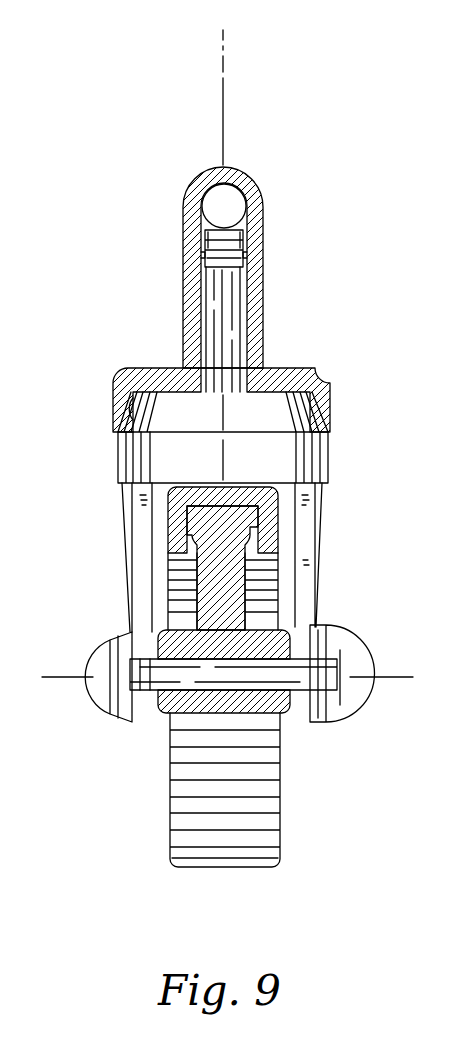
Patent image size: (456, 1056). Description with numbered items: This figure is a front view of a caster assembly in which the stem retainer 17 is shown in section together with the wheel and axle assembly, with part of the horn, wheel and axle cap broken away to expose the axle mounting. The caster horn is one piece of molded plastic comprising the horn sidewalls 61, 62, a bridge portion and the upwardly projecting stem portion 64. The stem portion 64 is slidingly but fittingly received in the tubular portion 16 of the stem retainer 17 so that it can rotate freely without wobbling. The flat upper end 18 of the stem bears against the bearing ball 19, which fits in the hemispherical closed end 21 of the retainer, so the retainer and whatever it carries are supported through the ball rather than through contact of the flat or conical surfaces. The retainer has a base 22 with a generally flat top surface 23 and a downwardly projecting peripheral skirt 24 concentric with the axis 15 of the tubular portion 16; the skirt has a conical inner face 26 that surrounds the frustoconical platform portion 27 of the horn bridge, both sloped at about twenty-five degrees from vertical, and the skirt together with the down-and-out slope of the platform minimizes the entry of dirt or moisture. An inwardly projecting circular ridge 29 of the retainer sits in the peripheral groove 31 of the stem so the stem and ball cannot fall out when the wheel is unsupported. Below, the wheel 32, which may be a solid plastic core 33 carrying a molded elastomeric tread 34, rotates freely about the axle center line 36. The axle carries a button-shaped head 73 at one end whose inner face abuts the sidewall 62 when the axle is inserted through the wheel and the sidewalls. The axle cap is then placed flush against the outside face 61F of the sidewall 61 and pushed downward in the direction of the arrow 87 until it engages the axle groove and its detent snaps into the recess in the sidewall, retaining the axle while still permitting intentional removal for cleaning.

The axis 15 is at (222, 78).
The tubular portion 16 is at (258, 294).
The stem retainer 17 is at (165, 265).
The flat upper end 18 is at (243, 215).
The bearing ball 19 is at (212, 213).
The hemispherical closed end 21 is at (213, 192).
The base 22 is at (290, 375).
The top surface 23 is at (156, 365).
The peripheral skirt 24 is at (326, 402).
The conical inner face 26 is at (133, 410).
The frustoconical platform portion 27 is at (300, 418).
The circular ridge 29 is at (248, 258).
The peripheral groove 31 is at (230, 252).
The wheel 32 is at (298, 830).
The core 33 is at (210, 578).
The tread 34 is at (263, 493).
The axis 36 is at (375, 678).
The horn sidewall 61 is at (305, 520).
The outside face 61F is at (320, 552).
The horn sidewall 62 is at (141, 525).
The stem portion 64 is at (218, 328).
The button-shaped head 73 is at (105, 663).
The arrow 87 is at (394, 653).